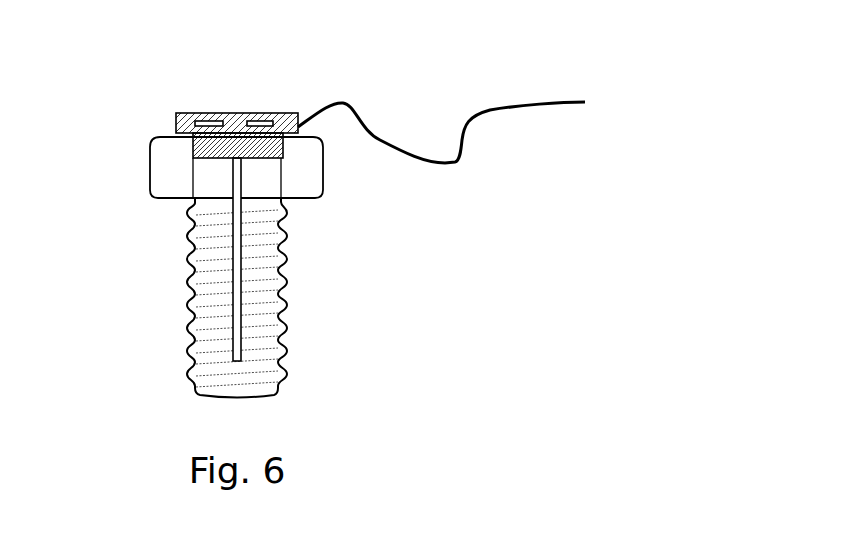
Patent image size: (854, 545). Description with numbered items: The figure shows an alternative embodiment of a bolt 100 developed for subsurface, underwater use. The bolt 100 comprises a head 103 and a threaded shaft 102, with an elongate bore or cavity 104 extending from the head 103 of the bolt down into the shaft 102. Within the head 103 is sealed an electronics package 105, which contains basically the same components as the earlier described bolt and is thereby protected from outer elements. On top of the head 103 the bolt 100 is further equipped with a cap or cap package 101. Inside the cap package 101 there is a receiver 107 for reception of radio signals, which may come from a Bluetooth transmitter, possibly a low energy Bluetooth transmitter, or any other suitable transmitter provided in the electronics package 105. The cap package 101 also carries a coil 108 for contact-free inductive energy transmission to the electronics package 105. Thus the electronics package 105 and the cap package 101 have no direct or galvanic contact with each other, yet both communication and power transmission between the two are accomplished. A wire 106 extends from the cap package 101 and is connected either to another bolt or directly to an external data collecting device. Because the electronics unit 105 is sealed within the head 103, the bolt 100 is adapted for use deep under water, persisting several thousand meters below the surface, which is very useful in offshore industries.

The bolt 100 is at (145, 356).
The cap package 101 is at (188, 113).
The shaft 102 is at (180, 298).
The head 103 is at (140, 186).
The elongate bore or cavity 104 is at (232, 234).
The electronics package 105 is at (196, 143).
The wire 106 is at (492, 110).
The receiver 107 is at (207, 121).
The coil 108 is at (257, 121).